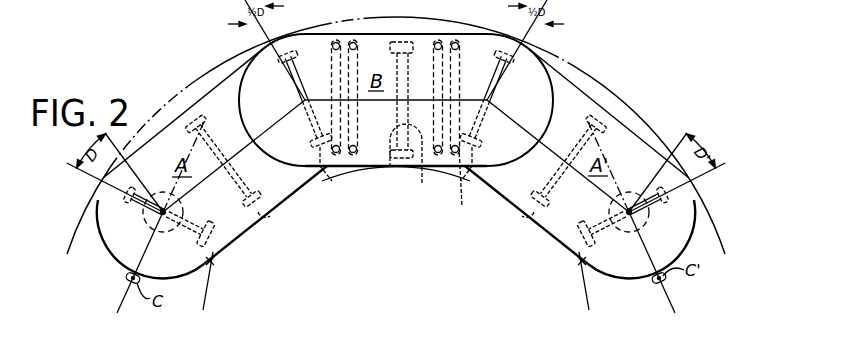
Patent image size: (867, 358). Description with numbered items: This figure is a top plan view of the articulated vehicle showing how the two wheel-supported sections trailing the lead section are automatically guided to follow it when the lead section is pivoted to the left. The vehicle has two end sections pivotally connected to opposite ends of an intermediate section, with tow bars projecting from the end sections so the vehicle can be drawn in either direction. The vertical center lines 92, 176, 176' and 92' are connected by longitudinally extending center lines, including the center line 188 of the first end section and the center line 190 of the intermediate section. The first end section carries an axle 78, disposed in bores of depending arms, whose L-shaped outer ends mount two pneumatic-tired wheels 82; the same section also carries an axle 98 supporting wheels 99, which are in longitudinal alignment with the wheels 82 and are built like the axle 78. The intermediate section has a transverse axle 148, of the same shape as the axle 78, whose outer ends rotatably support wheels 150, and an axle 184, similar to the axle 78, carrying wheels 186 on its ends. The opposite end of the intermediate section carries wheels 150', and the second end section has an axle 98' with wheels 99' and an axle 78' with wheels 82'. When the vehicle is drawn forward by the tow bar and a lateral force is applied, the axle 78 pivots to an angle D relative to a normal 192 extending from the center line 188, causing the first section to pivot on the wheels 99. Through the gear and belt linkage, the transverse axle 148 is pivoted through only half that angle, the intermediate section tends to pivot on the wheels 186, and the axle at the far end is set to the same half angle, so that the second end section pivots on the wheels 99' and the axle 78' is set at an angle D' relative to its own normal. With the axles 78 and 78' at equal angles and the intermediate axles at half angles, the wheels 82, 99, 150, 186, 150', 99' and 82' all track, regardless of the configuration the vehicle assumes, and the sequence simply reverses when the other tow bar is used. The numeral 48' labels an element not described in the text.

The normal 192 is at (131, 189).
The center line 188 is at (185, 196).
The axle 98 is at (237, 161).
The axle 78 is at (202, 225).
The center line 92 is at (171, 238).
The pneumatic-tired wheels 82 is at (231, 281).
The wheels 99 is at (279, 222).
The pneumatically-tired wheels 150 is at (346, 173).
The center line 176 is at (303, 101).
The transverse axle 148 is at (338, 121).
The pneumatically-tired wheels 186 is at (395, 141).
The center line 190 is at (410, 97).
The axle 184 is at (423, 176).
The support rod 48' is at (478, 185).
The center line 176' is at (502, 98).
The pneumatically-tired wheels 150' is at (489, 154).
The axle 98' is at (568, 162).
The wheels 99' is at (529, 231).
The axle 78' is at (604, 234).
The wheels 82' is at (561, 281).
The center line 92' is at (655, 224).